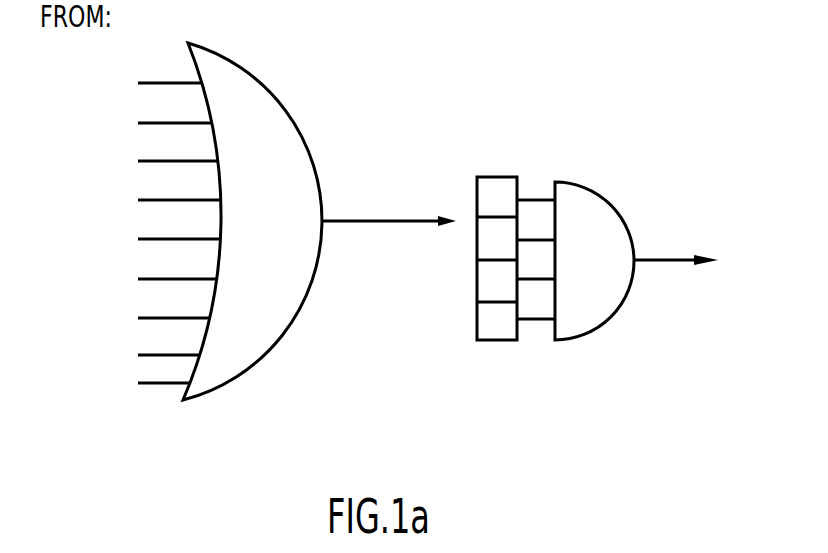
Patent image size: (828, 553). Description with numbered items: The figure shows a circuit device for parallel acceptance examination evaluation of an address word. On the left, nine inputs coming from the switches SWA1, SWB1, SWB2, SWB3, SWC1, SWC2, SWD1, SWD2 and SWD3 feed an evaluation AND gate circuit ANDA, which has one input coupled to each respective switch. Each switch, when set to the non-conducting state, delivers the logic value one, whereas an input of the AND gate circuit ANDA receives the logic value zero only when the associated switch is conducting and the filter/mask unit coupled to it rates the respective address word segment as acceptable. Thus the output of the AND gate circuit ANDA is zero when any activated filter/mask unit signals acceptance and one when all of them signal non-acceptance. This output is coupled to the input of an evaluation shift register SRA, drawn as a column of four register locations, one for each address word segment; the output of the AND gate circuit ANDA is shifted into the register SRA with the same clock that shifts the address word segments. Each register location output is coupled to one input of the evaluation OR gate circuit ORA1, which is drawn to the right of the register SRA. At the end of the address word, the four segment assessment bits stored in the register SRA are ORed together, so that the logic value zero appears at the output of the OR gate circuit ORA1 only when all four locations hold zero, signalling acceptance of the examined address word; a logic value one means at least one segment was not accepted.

The switch SWA1 is at (121, 79).
The switch SWB1 is at (126, 118).
The switch SWB2 is at (130, 159).
The switch SWB3 is at (133, 199).
The switch SWC1 is at (132, 238).
The switch SWC2 is at (131, 278).
The switch SWD1 is at (129, 317).
The switch SWD2 is at (124, 354).
The switch SWD3 is at (119, 386).
The evaluation AND gate circuit ANDA is at (319, 221).
The evaluation shift register SRA is at (515, 231).
The evaluation OR gate circuit ORA1 is at (636, 261).